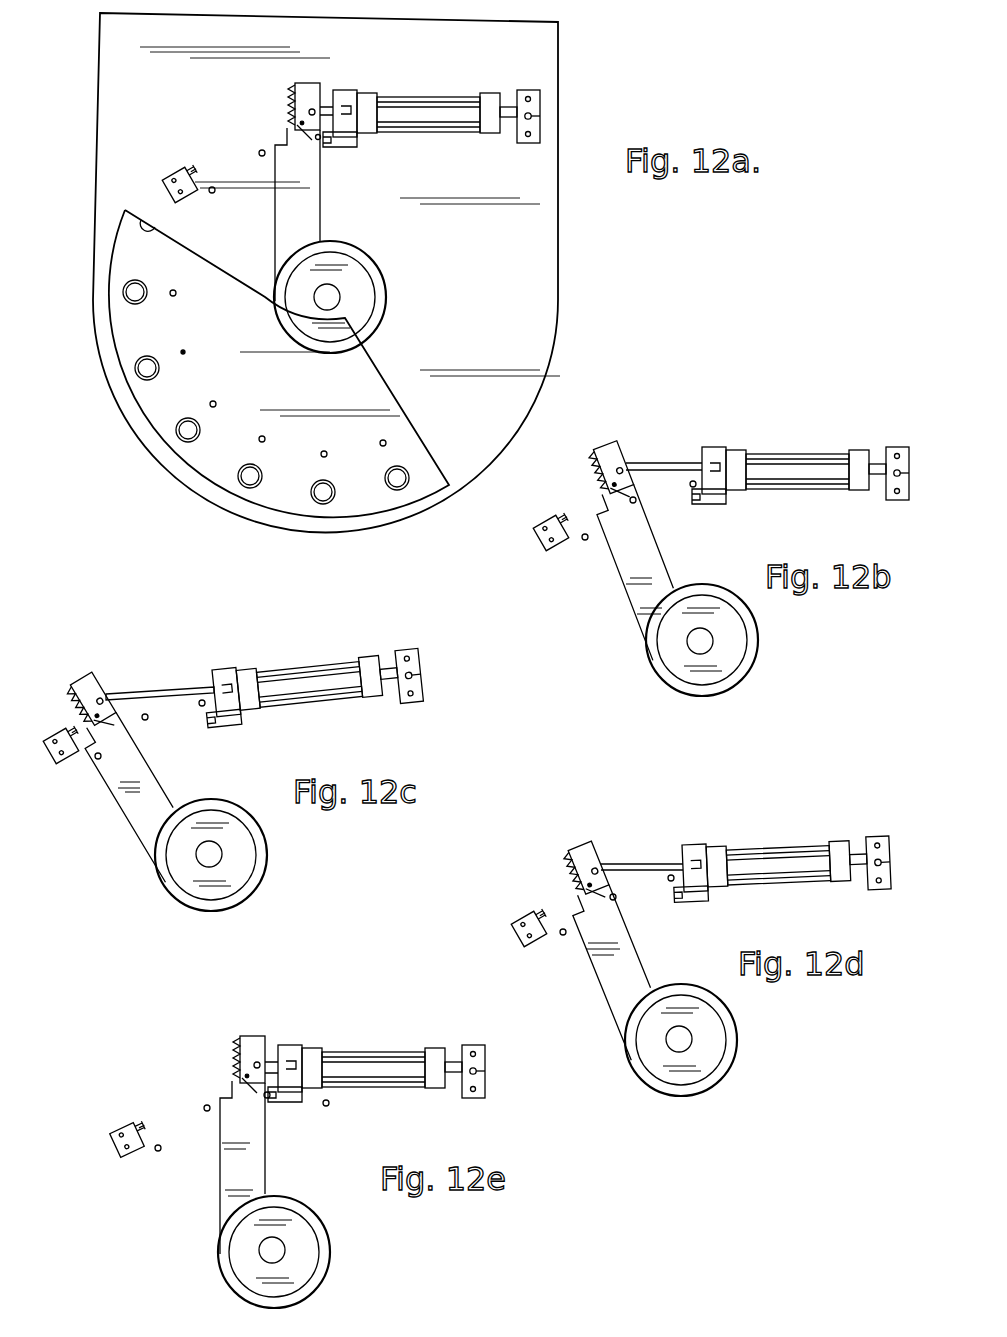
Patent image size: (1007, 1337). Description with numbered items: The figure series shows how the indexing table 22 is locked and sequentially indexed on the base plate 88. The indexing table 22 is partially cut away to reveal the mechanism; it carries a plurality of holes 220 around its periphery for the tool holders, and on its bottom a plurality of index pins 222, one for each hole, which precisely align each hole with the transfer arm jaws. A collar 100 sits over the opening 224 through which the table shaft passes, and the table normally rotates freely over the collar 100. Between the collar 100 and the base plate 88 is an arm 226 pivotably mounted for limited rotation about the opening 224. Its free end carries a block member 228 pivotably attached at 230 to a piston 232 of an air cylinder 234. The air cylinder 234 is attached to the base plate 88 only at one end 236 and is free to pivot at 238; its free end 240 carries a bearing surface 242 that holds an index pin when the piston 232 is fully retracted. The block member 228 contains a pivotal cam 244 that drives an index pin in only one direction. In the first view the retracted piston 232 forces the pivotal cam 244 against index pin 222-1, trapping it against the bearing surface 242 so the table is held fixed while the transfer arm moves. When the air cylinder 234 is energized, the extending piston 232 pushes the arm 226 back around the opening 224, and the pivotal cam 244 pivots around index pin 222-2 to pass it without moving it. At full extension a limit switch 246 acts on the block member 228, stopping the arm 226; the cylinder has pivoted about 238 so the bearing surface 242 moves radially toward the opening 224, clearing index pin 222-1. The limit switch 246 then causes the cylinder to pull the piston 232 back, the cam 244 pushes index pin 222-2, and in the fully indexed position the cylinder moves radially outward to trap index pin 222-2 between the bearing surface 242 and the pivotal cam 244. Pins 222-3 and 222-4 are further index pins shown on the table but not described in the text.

In FIG. 12A, the indexing table 22 is at (120, 378).
In FIG. 12A, the base plate 88 is at (99, 115).
In FIG. 12A, the collar 100 is at (385, 290).
In FIG. 12B, the collar 100 is at (758, 645).
In FIG. 12C, the collar 100 is at (265, 860).
In FIG. 12D, the collar 100 is at (736, 1056).
In FIG. 12E, the collar 100 is at (330, 1270).
In FIG. 12A, the holes 220 is at (396, 478).
In FIG. 12A, the index pins 222 is at (261, 437).
In FIG. 12A, the index pin 222-1 is at (319, 140).
In FIG. 12B, the index pin 222-1 is at (693, 487).
In FIG. 12C, the index pin 222-1 is at (202, 706).
In FIG. 12D, the index pin 222-1 is at (671, 881).
In FIG. 12E, the index pin 222-1 is at (330, 1102).
In FIG. 12A, the index pin 222-2 is at (262, 150).
In FIG. 12B, the index pin 222-2 is at (635, 503).
In FIG. 12C, the index pin 222-2 is at (146, 720).
In FIG. 12D, the index pin 222-2 is at (614, 900).
In FIG. 12E, the index pin 222-2 is at (268, 1098).
In FIG. 12A, the hole position 3 222-3 is at (214, 193).
In FIG. 12B, the hole position 3 222-3 is at (586, 540).
In FIG. 12C, the hole position 3 222-3 is at (97, 759).
In FIG. 12D, the hole position 3 222-3 is at (563, 935).
In FIG. 12E, the hole position 3 222-3 is at (207, 1111).
In FIG. 12E, the hole position 4 222-4 is at (155, 1150).
In FIG. 12A, the opening 224 is at (335, 302).
In FIG. 12B, the opening 224 is at (688, 642).
In FIG. 12C, the opening 224 is at (198, 855).
In FIG. 12D, the opening 224 is at (668, 1039).
In FIG. 12E, the opening 224 is at (262, 1255).
In FIG. 12A, the arm 226 is at (320, 232).
In FIG. 12B, the arm 226 is at (632, 605).
In FIG. 12C, the arm 226 is at (124, 828).
In FIG. 12D, the arm 226 is at (604, 1005).
In FIG. 12E, the arm 226 is at (217, 1197).
In FIG. 12A, the block member 228 is at (307, 83).
In FIG. 12B, the block member 228 is at (607, 452).
In FIG. 12C, the block member 228 is at (93, 684).
In FIG. 12D, the block member 228 is at (588, 857).
In FIG. 12E, the block member 228 is at (255, 1036).
In FIG. 12A, the pivotal attachment 230 is at (315, 108).
In FIG. 12B, the pivotal attachment 230 is at (622, 468).
In FIG. 12C, the pivotal attachment 230 is at (104, 701).
In FIG. 12D, the pivotal attachment 230 is at (597, 870).
In FIG. 12E, the pivotal attachment 230 is at (256, 1063).
In FIG. 12A, the piston 232 is at (327, 110).
In FIG. 12B, the piston 232 is at (667, 464).
In FIG. 12C, the piston 232 is at (165, 692).
In FIG. 12D, the piston 232 is at (650, 864).
In FIG. 12E, the piston 232 is at (273, 1065).
In FIG. 12A, the air cylinder 234 is at (420, 97).
In FIG. 12B, the air cylinder 234 is at (790, 450).
In FIG. 12C, the air cylinder 234 is at (305, 668).
In FIG. 12D, the air cylinder 234 is at (773, 841).
In FIG. 12E, the air cylinder 234 is at (385, 1052).
In FIG. 12A, the end 236 is at (526, 90).
In FIG. 12B, the end 236 is at (905, 490).
In FIG. 12C, the end 236 is at (420, 680).
In FIG. 12D, the end 236 is at (884, 884).
In FIG. 12E, the end 236 is at (482, 1092).
In FIG. 12A, the pivot point 238 is at (541, 116).
In FIG. 12B, the pivot point 238 is at (910, 472).
In FIG. 12C, the pivot point 238 is at (413, 668).
In FIG. 12D, the pivot point 238 is at (888, 855).
In FIG. 12E, the pivot point 238 is at (486, 1070).
In FIG. 12A, the free end 240 is at (350, 96).
In FIG. 12B, the free end 240 is at (715, 452).
In FIG. 12C, the free end 240 is at (222, 677).
In FIG. 12D, the free end 240 is at (695, 851).
In FIG. 12E, the free end 240 is at (297, 1060).
In FIG. 12A, the bearing surface 242 is at (340, 141).
In FIG. 12B, the bearing surface 242 is at (705, 500).
In FIG. 12C, the bearing surface 242 is at (222, 724).
In FIG. 12D, the bearing surface 242 is at (680, 896).
In FIG. 12E, the bearing surface 242 is at (276, 1101).
In FIG. 12A, the pivotal cam 244 is at (289, 118).
In FIG. 12B, the pivotal cam 244 is at (599, 500).
In FIG. 12C, the pivotal cam 244 is at (80, 716).
In FIG. 12D, the pivotal cam 244 is at (575, 900).
In FIG. 12E, the pivotal cam 244 is at (230, 1072).
In FIG. 12A, the limit switch 246 is at (178, 172).
In FIG. 12B, the limit switch 246 is at (548, 520).
In FIG. 12C, the limit switch 246 is at (55, 735).
In FIG. 12D, the limit switch 246 is at (527, 913).
In FIG. 12E, the limit switch 246 is at (120, 1128).